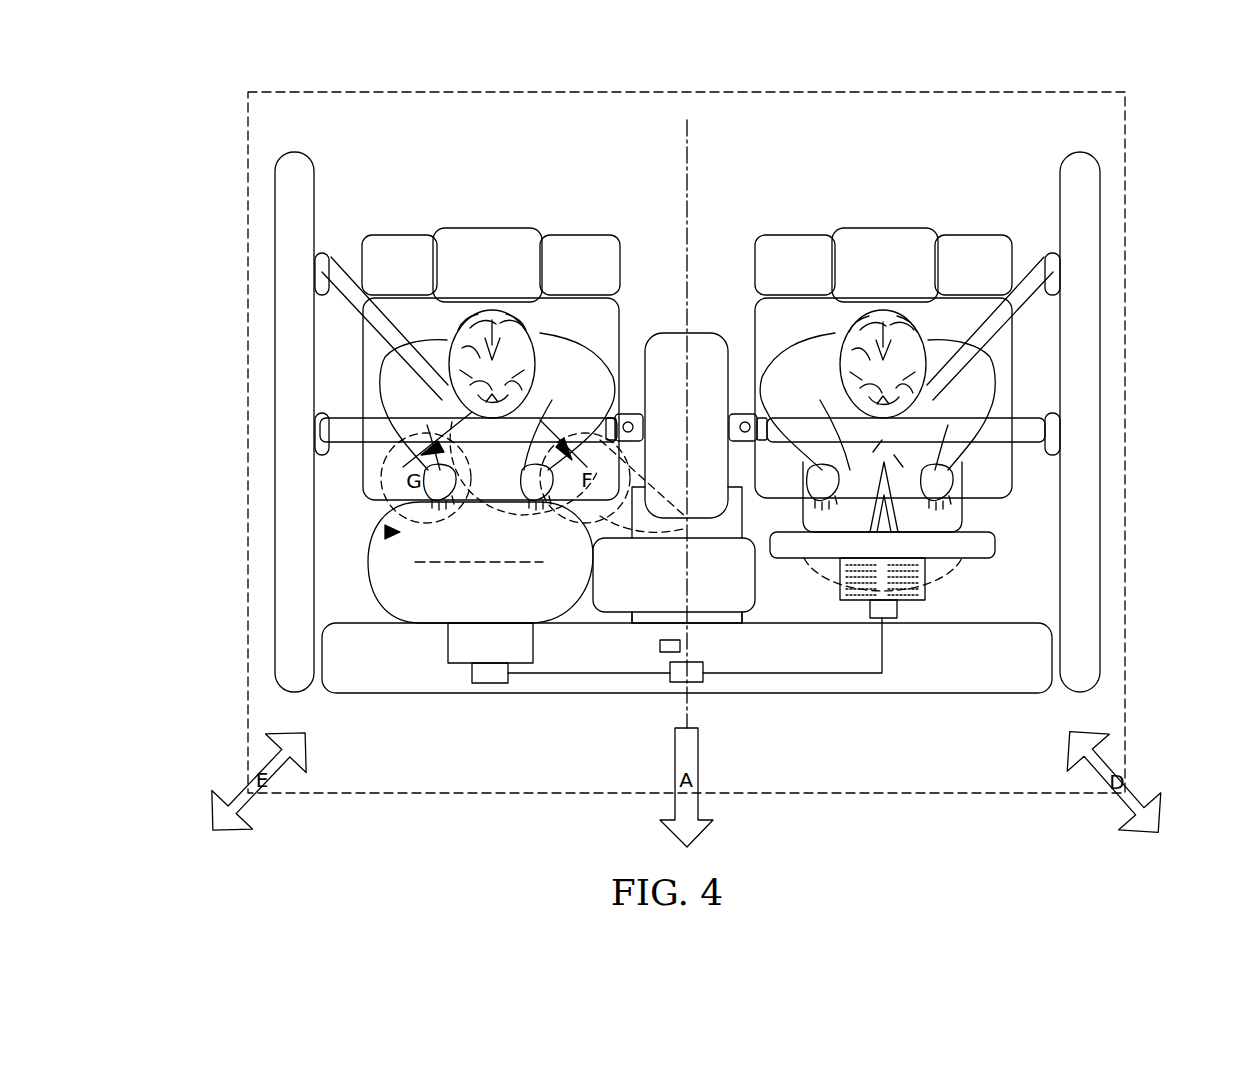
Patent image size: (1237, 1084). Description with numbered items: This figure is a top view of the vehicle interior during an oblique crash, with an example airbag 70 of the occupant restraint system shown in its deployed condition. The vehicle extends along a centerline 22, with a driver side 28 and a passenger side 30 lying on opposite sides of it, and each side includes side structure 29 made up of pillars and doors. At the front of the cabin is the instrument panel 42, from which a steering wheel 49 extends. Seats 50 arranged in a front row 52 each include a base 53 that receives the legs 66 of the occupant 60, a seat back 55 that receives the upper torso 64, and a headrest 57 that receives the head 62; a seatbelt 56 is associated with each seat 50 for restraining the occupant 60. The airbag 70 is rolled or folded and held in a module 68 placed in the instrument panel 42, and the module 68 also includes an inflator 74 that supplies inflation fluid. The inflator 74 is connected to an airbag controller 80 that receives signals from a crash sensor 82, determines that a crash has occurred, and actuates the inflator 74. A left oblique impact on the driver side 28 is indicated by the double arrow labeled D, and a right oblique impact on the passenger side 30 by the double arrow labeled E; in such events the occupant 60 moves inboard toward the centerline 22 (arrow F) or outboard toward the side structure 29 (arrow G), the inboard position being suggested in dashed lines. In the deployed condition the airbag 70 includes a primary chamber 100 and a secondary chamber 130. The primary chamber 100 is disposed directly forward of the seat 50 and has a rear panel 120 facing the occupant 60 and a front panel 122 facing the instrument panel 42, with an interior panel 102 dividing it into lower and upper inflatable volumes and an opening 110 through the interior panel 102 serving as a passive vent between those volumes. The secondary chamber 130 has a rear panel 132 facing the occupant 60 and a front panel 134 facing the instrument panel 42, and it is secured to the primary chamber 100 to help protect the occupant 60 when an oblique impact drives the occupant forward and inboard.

The centerline 22 is at (687, 142).
The driver side 28 is at (1158, 178).
The side structure 29 is at (288, 270).
The passenger side 30 is at (180, 160).
The instrument panel 42 is at (1013, 680).
The steering wheel 49 is at (983, 542).
The seat 50 is at (687, 338).
The front row 52 is at (320, 487).
The seat base 53 is at (352, 362).
The seat back 55 is at (578, 245).
The seatbelt 56 is at (362, 300).
The headrest 57 is at (474, 232).
The occupant 60 is at (688, 354).
The head 62 is at (490, 318).
The upper torso 64 is at (540, 345).
The legs 66 is at (953, 508).
The module 68 is at (516, 664).
The airbag 70 is at (385, 532).
The inflator 74 is at (486, 683).
The airbag controller 80 is at (690, 683).
The crash sensor 82 is at (681, 647).
The primary chamber 100 is at (378, 605).
The interior panel 102 is at (415, 562).
The opening 110 is at (448, 572).
The rear panel 120 is at (490, 500).
The front panel 122 is at (553, 624).
The secondary chamber 130 is at (702, 598).
The rear panel 132 is at (720, 538).
The front panel 134 is at (638, 612).